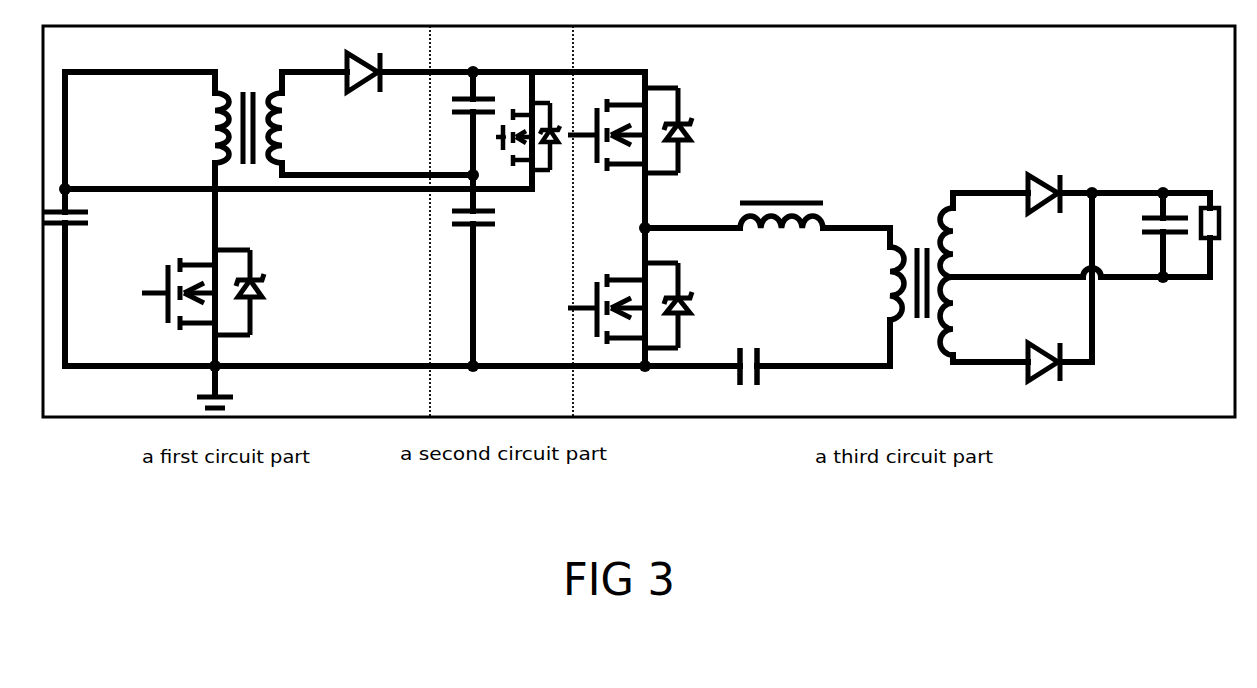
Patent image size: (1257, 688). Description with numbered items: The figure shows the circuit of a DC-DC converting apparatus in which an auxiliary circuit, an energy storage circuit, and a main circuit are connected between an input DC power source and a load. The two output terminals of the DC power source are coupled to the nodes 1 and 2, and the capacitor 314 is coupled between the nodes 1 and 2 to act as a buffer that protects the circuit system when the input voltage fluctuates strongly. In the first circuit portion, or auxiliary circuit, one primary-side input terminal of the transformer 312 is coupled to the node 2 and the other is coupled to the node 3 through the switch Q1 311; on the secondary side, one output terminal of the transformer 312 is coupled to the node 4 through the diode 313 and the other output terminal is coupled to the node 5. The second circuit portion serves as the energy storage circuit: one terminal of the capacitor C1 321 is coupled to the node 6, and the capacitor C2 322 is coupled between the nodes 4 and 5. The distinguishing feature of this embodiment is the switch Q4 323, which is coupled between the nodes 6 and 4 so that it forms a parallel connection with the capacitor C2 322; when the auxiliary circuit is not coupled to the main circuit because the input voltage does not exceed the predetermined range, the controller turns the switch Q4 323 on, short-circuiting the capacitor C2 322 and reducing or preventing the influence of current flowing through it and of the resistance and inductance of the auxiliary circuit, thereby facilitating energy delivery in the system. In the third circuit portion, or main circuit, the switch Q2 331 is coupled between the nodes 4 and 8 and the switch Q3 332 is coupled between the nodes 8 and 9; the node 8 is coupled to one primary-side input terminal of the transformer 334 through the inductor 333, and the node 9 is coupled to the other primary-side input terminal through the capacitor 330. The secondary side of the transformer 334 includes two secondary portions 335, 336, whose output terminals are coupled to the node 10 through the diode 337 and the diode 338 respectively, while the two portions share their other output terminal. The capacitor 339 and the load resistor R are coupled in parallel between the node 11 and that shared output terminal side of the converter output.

The node 1 is at (78, 351).
The node 2 is at (73, 173).
The node 3 is at (221, 358).
The node 4 is at (474, 60).
The node 5 is at (497, 149).
The node 6 is at (485, 181).
The node 8 is at (650, 216).
The node 9 is at (645, 379).
The node 10 is at (1097, 180).
The node 11 is at (1157, 222).
The switch Q1 311 is at (221, 294).
The transformer 312 is at (229, 128).
The diode 313 is at (359, 85).
The capacitor 314 is at (86, 218).
The capacitor C1 321 is at (464, 248).
The capacitor C2 322 is at (464, 108).
The switch Q4 323 is at (532, 163).
The capacitor 330 is at (748, 378).
The switch Q2 331 is at (649, 130).
The switch Q3 332 is at (649, 305).
The inductor 333 is at (781, 199).
The transformer 334 is at (889, 283).
The secondary portion 335 is at (966, 242).
The secondary portion 336 is at (966, 316).
The diode 337 is at (1044, 182).
The diode 338 is at (1046, 376).
The capacitor 339 is at (1156, 239).
The switch Q1 is at (217, 294).
The switch Q2 is at (642, 135).
The switch Q3 is at (640, 309).
The switch Q4 is at (531, 153).
The capacitor C1 is at (464, 233).
The capacitor C2 is at (464, 118).
The load resistor R is at (1214, 208).